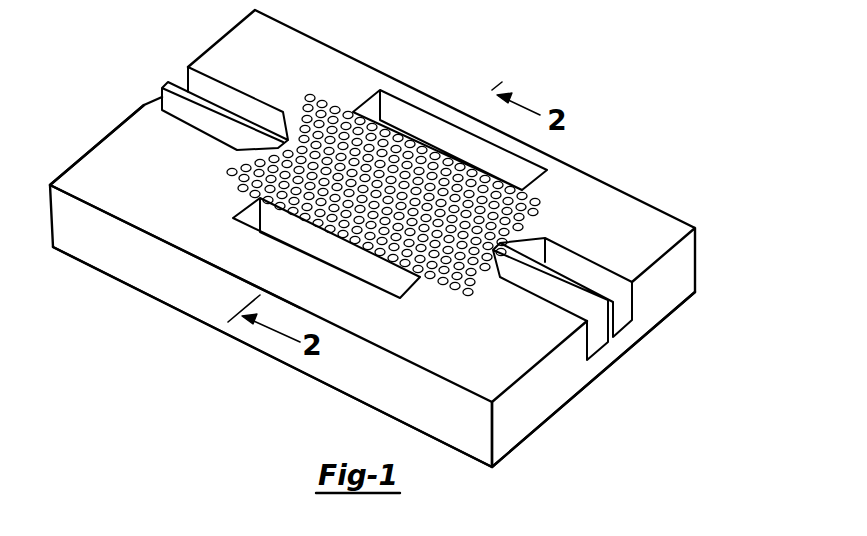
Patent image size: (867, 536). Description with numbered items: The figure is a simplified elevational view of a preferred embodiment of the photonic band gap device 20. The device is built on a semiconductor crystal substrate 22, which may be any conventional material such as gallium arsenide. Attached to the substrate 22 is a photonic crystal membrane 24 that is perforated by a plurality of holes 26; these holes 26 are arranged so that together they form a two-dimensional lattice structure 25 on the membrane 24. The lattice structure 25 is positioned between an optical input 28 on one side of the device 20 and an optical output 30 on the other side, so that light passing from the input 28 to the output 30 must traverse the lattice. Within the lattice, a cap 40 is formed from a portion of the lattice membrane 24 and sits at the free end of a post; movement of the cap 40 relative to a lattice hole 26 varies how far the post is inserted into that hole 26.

The photonic band gap device 20 is at (447, 86).
The semiconductor crystal substrate 22 is at (107, 273).
The photonic crystal membrane 24 is at (95, 173).
The two-dimensional lattice structure 25 is at (546, 198).
The holes 26 is at (443, 285).
The optical input 28 is at (170, 105).
The optical output 30 is at (572, 282).
The cap 40 is at (443, 177).